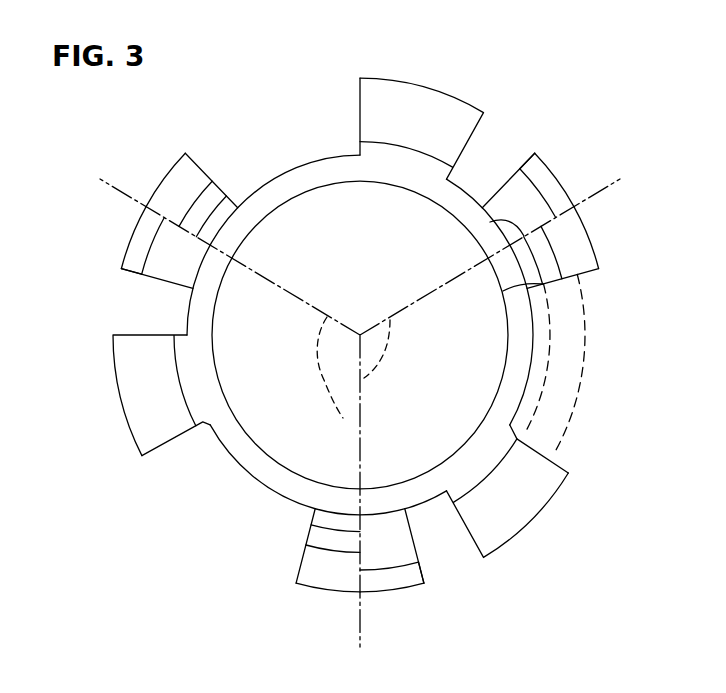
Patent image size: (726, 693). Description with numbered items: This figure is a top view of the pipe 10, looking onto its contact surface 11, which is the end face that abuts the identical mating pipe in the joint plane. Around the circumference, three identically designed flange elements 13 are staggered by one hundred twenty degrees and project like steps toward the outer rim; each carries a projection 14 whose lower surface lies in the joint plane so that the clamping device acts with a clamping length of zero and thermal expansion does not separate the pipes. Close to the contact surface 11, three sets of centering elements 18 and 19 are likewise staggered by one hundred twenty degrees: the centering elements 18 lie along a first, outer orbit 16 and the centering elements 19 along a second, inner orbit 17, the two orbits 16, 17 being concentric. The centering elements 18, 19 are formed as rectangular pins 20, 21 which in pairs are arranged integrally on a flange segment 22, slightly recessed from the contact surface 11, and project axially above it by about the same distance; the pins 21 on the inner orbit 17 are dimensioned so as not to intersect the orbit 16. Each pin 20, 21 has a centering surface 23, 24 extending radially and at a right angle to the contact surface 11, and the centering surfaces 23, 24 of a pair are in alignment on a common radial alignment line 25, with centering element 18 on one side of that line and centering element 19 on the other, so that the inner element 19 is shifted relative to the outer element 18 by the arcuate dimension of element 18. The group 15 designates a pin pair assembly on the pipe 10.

The pipe 10 is at (237, 466).
The contact surface 11 is at (272, 490).
The flange element 13 is at (360, 100).
The projection 14 is at (418, 98).
The composite pole assembly 15 is at (572, 142).
The first orbit 16 is at (585, 307).
The second orbit 17 is at (548, 384).
The centering element 18 is at (578, 180).
The centering element 19 is at (560, 255).
The rectangular pin 20 is at (540, 165).
The rectangular pin 21 is at (503, 291).
The flange segment 22 is at (508, 205).
The centering surface 23 is at (583, 224).
The centering surface 24 is at (490, 222).
The radial alignment line 25 is at (362, 378).